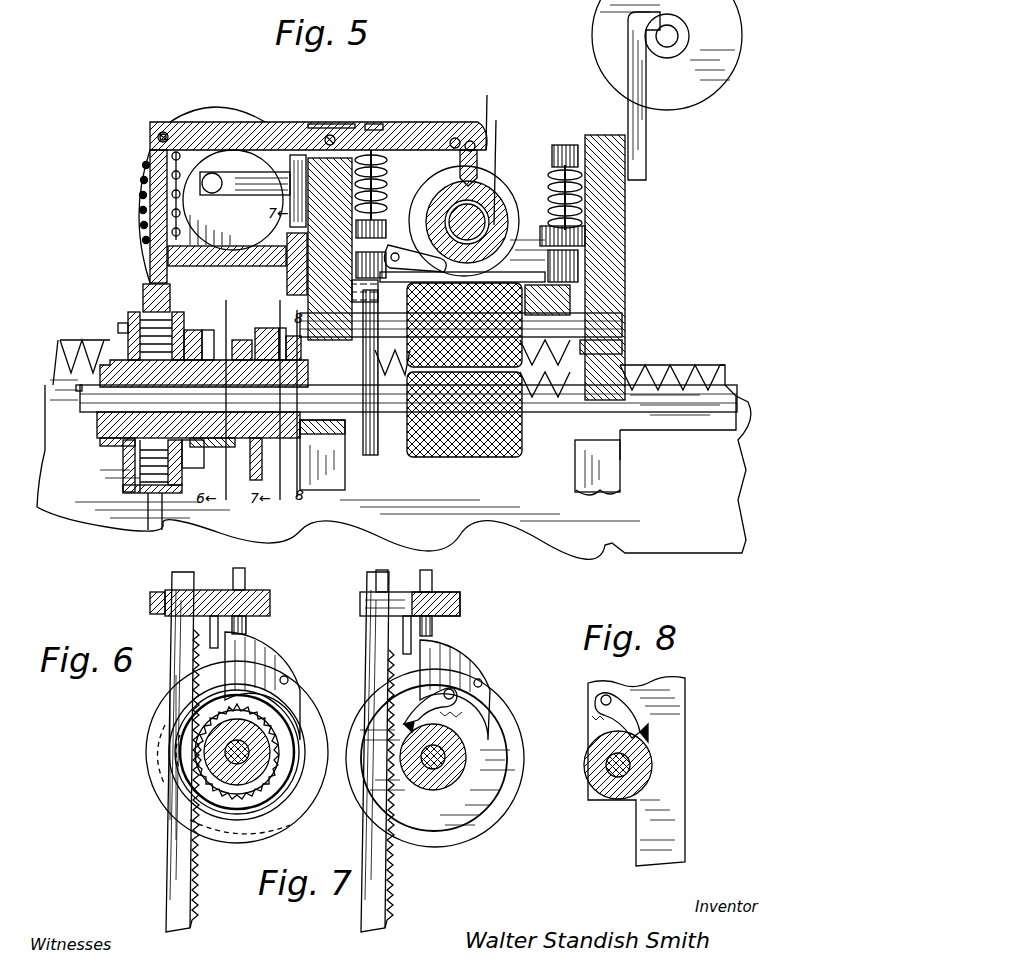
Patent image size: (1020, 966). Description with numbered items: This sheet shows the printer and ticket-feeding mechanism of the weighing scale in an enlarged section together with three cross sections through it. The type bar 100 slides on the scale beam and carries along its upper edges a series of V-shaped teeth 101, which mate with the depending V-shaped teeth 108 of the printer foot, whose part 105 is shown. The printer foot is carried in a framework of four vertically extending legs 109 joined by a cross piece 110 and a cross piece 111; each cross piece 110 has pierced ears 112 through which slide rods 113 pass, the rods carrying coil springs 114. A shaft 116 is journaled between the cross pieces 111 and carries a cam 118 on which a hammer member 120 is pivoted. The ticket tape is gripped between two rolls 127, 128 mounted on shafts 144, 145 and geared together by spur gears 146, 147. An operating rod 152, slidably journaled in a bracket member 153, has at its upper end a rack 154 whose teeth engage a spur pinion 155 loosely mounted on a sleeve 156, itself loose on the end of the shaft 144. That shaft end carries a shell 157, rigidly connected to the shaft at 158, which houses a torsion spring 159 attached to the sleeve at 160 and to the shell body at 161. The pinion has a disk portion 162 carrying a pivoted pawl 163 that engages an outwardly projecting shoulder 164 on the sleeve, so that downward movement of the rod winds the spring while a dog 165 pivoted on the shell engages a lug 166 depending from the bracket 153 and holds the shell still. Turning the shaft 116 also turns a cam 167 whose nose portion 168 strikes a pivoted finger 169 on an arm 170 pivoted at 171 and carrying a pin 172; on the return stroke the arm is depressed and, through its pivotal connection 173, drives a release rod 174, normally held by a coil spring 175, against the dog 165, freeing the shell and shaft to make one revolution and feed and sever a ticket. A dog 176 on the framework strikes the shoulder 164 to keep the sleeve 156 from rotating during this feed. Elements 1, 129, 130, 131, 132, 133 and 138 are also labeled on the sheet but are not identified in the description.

In FIG. 5, the frame 1 is at (680, 536).
In FIG. 5, the type bar 100 is at (642, 416).
In FIG. 5, the V-shaped teeth 101 is at (668, 370).
In FIG. 5, the printer foot part 105 is at (600, 301).
In FIG. 5, the depending V-shaped teeth 108 is at (605, 352).
In FIG. 5, the vertically extending legs 109 is at (606, 490).
In FIG. 8, the vertically extending legs 109 is at (655, 842).
In FIG. 5, the cross piece 110 is at (308, 228).
In FIG. 5, the cross piece 111 is at (575, 262).
In FIG. 5, the pierced ears 112 is at (382, 233).
In FIG. 5, the slide rods 113 is at (385, 126).
In FIG. 5, the coil springs 114 is at (380, 196).
In FIG. 5, the shaft 116 is at (455, 202).
In FIG. 5, the cam 118 is at (496, 236).
In FIG. 5, the hammer member 120 is at (415, 258).
In FIG. 5, the roll 127 is at (520, 430).
In FIG. 5, the roll 128 is at (522, 366).
In FIG. 5, the roller 129 is at (690, 35).
In FIG. 5, the arm 130 is at (645, 118).
In FIG. 5, the lever 131 is at (224, 174).
In FIG. 5, the cover plate 132 is at (278, 150).
In FIG. 5, the pin 133 is at (500, 215).
In FIG. 5, the pivot pin 138 is at (209, 192).
In FIG. 5, the shaft 144 is at (633, 422).
In FIG. 5, the shaft 145 is at (608, 331).
In FIG. 5, the spur gear 146 is at (384, 294).
In FIG. 5, the spur gear 147 is at (372, 452).
In FIG. 6, the operating rod 152 is at (172, 862).
In FIG. 7, the operating rod 152 is at (368, 912).
In FIG. 5, the bracket member 153 is at (150, 258).
In FIG. 6, the bracket member 153 is at (208, 590).
In FIG. 7, the bracket member 153 is at (418, 592).
In FIG. 6, the rack 154 is at (196, 895).
In FIG. 7, the rack 154 is at (392, 893).
In FIG. 5, the spur pinion 155 is at (236, 440).
In FIG. 6, the spur pinion 155 is at (258, 718).
In FIG. 5, the sleeve 156 is at (120, 442).
In FIG. 6, the sleeve 156 is at (270, 775).
In FIG. 7, the sleeve 156 is at (450, 742).
In FIG. 8, the sleeve 156 is at (596, 768).
In FIG. 5, the shell 157 is at (128, 332).
In FIG. 5, the rigid connection 158 is at (75, 413).
In FIG. 5, the torsion spring 159 is at (138, 472).
In FIG. 6, the torsion spring 159 is at (272, 735).
In FIG. 5, the spring attachment 160 is at (190, 358).
In FIG. 5, the spring attachment 161 is at (148, 486).
In FIG. 5, the disk portion 162 is at (282, 335).
In FIG. 7, the disk portion 162 is at (470, 800).
In FIG. 5, the pawl 163 is at (282, 328).
In FIG. 7, the pawl 163 is at (462, 690).
In FIG. 7, the shoulder 164 is at (406, 730).
In FIG. 8, the shoulder 164 is at (650, 734).
In FIG. 5, the dog 165 is at (143, 292).
In FIG. 6, the dog 165 is at (265, 662).
In FIG. 7, the dog 165 is at (440, 658).
In FIG. 6, the lug 166 is at (212, 628).
In FIG. 7, the lug 166 is at (380, 628).
In FIG. 5, the cam 167 is at (508, 162).
In FIG. 5, the nose portion 168 is at (494, 111).
In FIG. 5, the pivoted finger 169 is at (452, 138).
In FIG. 5, the arm 170 is at (178, 133).
In FIG. 5, the pivot point 171 is at (331, 134).
In FIG. 5, the pin 172 is at (470, 141).
In FIG. 5, the pivotal connection 173 is at (157, 138).
In FIG. 5, the release rod 174 is at (150, 230).
In FIG. 5, the coil spring 175 is at (146, 200).
In FIG. 8, the dog 176 is at (626, 706).